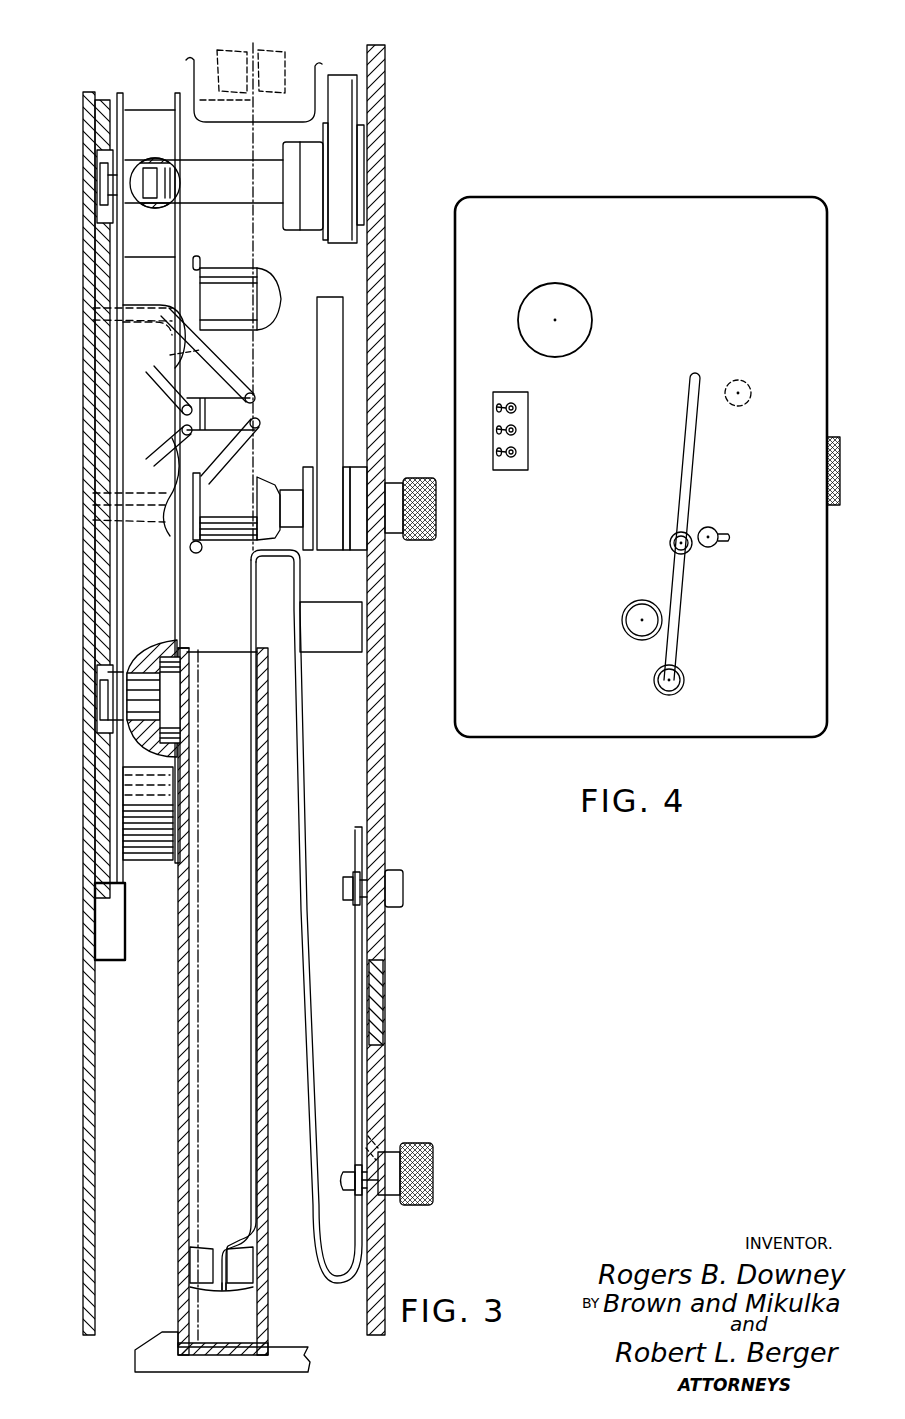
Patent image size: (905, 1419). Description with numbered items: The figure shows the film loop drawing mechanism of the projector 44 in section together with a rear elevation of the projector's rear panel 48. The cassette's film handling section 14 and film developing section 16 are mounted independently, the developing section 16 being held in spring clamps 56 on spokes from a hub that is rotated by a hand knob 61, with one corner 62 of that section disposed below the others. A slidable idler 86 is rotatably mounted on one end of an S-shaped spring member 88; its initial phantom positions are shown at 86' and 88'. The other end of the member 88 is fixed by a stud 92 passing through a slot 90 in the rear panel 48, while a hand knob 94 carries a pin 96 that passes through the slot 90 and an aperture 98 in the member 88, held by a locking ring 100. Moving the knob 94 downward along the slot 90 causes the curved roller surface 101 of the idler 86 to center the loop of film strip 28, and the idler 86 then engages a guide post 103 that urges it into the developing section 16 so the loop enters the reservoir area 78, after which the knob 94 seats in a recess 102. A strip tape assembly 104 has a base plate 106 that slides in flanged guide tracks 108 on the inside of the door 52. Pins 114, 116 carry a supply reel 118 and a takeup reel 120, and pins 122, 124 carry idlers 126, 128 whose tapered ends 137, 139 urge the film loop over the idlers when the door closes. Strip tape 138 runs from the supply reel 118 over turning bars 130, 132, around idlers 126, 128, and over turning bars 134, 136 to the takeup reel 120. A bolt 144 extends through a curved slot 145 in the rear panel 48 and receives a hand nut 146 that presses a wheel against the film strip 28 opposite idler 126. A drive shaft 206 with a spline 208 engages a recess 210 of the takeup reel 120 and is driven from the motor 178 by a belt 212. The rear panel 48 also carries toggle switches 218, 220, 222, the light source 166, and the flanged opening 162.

In FIG. 3, the film handling section 14 is at (326, 82).
In FIG. 3, the film developing section 16 is at (182, 1090).
In FIG. 3, the film strip 28 is at (240, 157).
In FIG. 4, the projector 44 is at (717, 196).
In FIG. 3, the rear panel 48 is at (373, 1283).
In FIG. 4, the rear panel 48 is at (508, 614).
In FIG. 3, the door 52 is at (90, 822).
In FIG. 3, the spring clamps 56 is at (162, 1342).
In FIG. 4, the hand knob 61 is at (623, 632).
In FIG. 3, the corner 62 is at (185, 893).
In FIG. 3, the reservoir area 78 is at (250, 1318).
In FIG. 3, the slidable idler 86 is at (247, 1272).
In FIG. 3, the initial position of idler 86' is at (293, 64).
In FIG. 3, the S-shaped spring member 88 is at (306, 916).
In FIG. 3, the initial position of spring member 88' is at (248, 78).
In FIG. 3, the slot 90 is at (375, 1003).
In FIG. 4, the slot 90 is at (690, 493).
In FIG. 3, the stud 92 is at (383, 870).
In FIG. 3, the hand knob 94 is at (433, 1152).
In FIG. 4, the hand knob 94 is at (684, 675).
In FIG. 3, the pin 96 is at (357, 1196).
In FIG. 3, the aperture 98 is at (345, 1181).
In FIG. 3, the locking ring 100 is at (352, 1170).
In FIG. 3, the curved roller surface 101 is at (240, 1293).
In FIG. 3, the recess 102 is at (372, 1140).
In FIG. 3, the guide post 103 is at (268, 588).
In FIG. 3, the strip tape assembly 104 is at (262, 375).
In FIG. 3, the base plate 106 is at (100, 627).
In FIG. 3, the flanged guide tracks 108 is at (105, 963).
In FIG. 3, the pin 114 is at (108, 717).
In FIG. 3, the pin 116 is at (110, 207).
In FIG. 3, the supply reel 118 is at (122, 864).
In FIG. 3, the takeup reel 120 is at (141, 459).
In FIG. 3, the pin 122 is at (200, 515).
In FIG. 3, the pin 124 is at (139, 315).
In FIG. 3, the idler 126 is at (201, 549).
In FIG. 3, the idler 128 is at (200, 258).
In FIG. 3, the turning bar 130 is at (177, 428).
In FIG. 3, the turning bar 132 is at (258, 425).
In FIG. 3, the turning bar 134 is at (262, 390).
In FIG. 3, the turning bar 136 is at (167, 398).
In FIG. 3, the tapered end 137 is at (262, 478).
In FIG. 3, the strip tape 138 is at (130, 600).
In FIG. 3, the tapered end 139 is at (283, 278).
In FIG. 3, the bolt 144 is at (422, 478).
In FIG. 4, the curved slot 145 is at (730, 540).
In FIG. 4, the hand nut 146 is at (718, 530).
In FIG. 4, the flanged opening 162 is at (838, 437).
In FIG. 4, the light source 166 is at (749, 391).
In FIG. 4, the motor 178 is at (578, 315).
In FIG. 3, the drive shaft 206 is at (271, 205).
In FIG. 3, the spline 208 is at (160, 140).
In FIG. 3, the recess 210 is at (134, 215).
In FIG. 3, the belt 212 is at (352, 118).
In FIG. 4, the toggle switch 218 is at (512, 404).
In FIG. 4, the toggle switch 220 is at (506, 429).
In FIG. 4, the toggle switch 222 is at (499, 457).